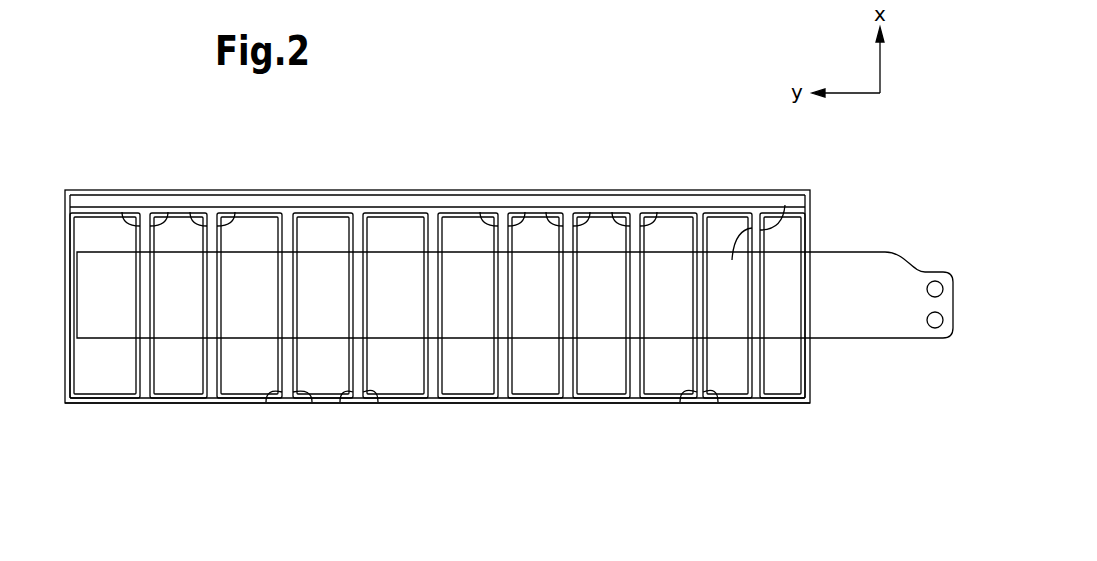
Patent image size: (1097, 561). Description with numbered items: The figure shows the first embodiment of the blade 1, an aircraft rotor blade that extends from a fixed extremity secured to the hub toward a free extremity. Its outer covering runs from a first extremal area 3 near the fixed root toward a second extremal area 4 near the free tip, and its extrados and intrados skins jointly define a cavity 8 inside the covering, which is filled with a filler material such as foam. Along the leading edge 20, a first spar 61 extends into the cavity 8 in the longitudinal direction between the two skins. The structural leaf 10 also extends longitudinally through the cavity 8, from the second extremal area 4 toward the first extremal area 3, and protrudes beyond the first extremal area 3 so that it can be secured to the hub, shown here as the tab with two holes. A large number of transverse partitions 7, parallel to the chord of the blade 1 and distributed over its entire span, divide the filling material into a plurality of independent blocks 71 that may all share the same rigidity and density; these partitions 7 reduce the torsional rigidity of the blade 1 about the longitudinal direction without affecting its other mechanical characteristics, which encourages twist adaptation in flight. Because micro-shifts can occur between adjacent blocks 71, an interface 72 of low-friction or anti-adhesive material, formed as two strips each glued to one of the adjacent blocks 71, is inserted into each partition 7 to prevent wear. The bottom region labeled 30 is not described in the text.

The blade 1 is at (428, 102).
The first extremal area 3 is at (808, 392).
The second extremal area 4 is at (67, 403).
The transverse partition 7 is at (452, 307).
The cavity 8 is at (812, 222).
The leaf 10 is at (850, 258).
The leading edge 20 is at (470, 197).
The base plate 30 is at (463, 405).
The first spar 61 is at (289, 200).
The block 71 is at (94, 367).
The interface 72 is at (461, 307).